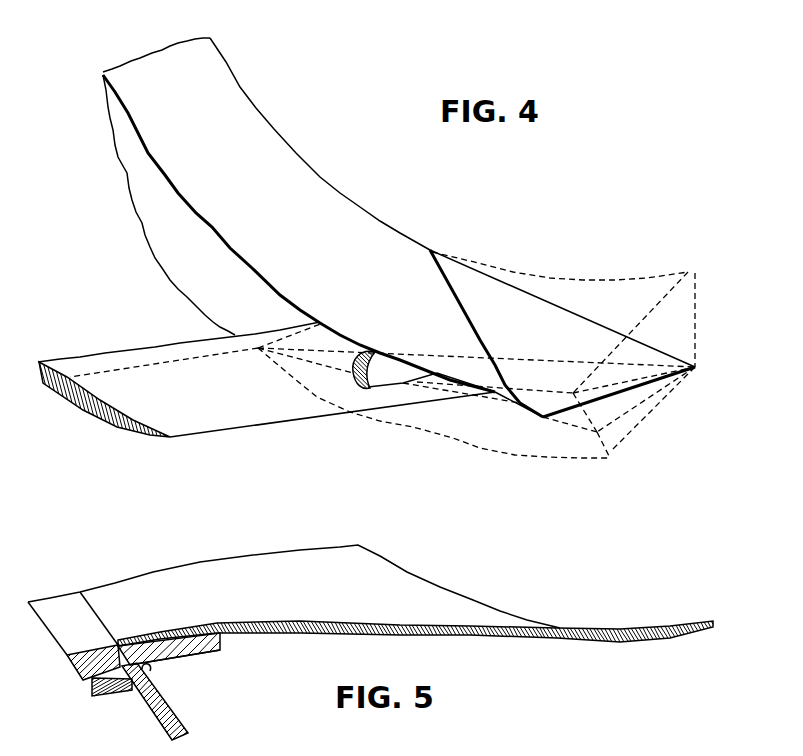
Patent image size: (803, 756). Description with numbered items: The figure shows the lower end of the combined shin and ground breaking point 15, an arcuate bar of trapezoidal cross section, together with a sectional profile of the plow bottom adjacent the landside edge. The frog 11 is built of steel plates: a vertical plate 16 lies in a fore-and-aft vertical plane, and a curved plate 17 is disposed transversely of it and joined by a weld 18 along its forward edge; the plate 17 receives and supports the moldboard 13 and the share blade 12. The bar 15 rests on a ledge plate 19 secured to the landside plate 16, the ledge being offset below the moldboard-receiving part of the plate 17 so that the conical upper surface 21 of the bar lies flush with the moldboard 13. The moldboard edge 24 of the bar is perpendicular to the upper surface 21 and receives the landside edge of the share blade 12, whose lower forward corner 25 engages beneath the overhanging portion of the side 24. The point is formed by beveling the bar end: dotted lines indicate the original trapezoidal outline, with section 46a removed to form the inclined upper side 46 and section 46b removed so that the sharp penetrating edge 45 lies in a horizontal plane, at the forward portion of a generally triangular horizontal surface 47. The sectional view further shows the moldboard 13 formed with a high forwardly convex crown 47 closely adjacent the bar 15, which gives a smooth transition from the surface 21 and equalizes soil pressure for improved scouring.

In FIG. 5, the frog 11 is at (210, 660).
In FIG. 4, the share blade 12 is at (280, 412).
In FIG. 5, the moldboard 13 is at (405, 586).
In FIG. 4, the combined shin and ground breaking point 15 is at (280, 126).
In FIG. 5, the combined shin and ground breaking point 15 is at (53, 597).
In FIG. 5, the vertical plate 16 is at (157, 715).
In FIG. 5, the curved plate 17 is at (224, 649).
In FIG. 5, the weld 18 is at (149, 667).
In FIG. 5, the ledge plate 19 is at (97, 695).
In FIG. 4, the upper surface 21 is at (308, 198).
In FIG. 4, the moldboard edge 24 is at (202, 283).
In FIG. 4, the lower forward corner 25 is at (418, 386).
In FIG. 4, the sharp penetrating edge 45 is at (617, 394).
In FIG. 4, the upper side of the sharpened end 46 is at (517, 299).
In FIG. 4, the removed section 46a is at (689, 268).
In FIG. 4, the removed section 46b is at (610, 460).
In FIG. 4, the triangular horizontal surface 47 is at (533, 424).
In FIG. 5, the triangular horizontal surface 47 is at (221, 620).